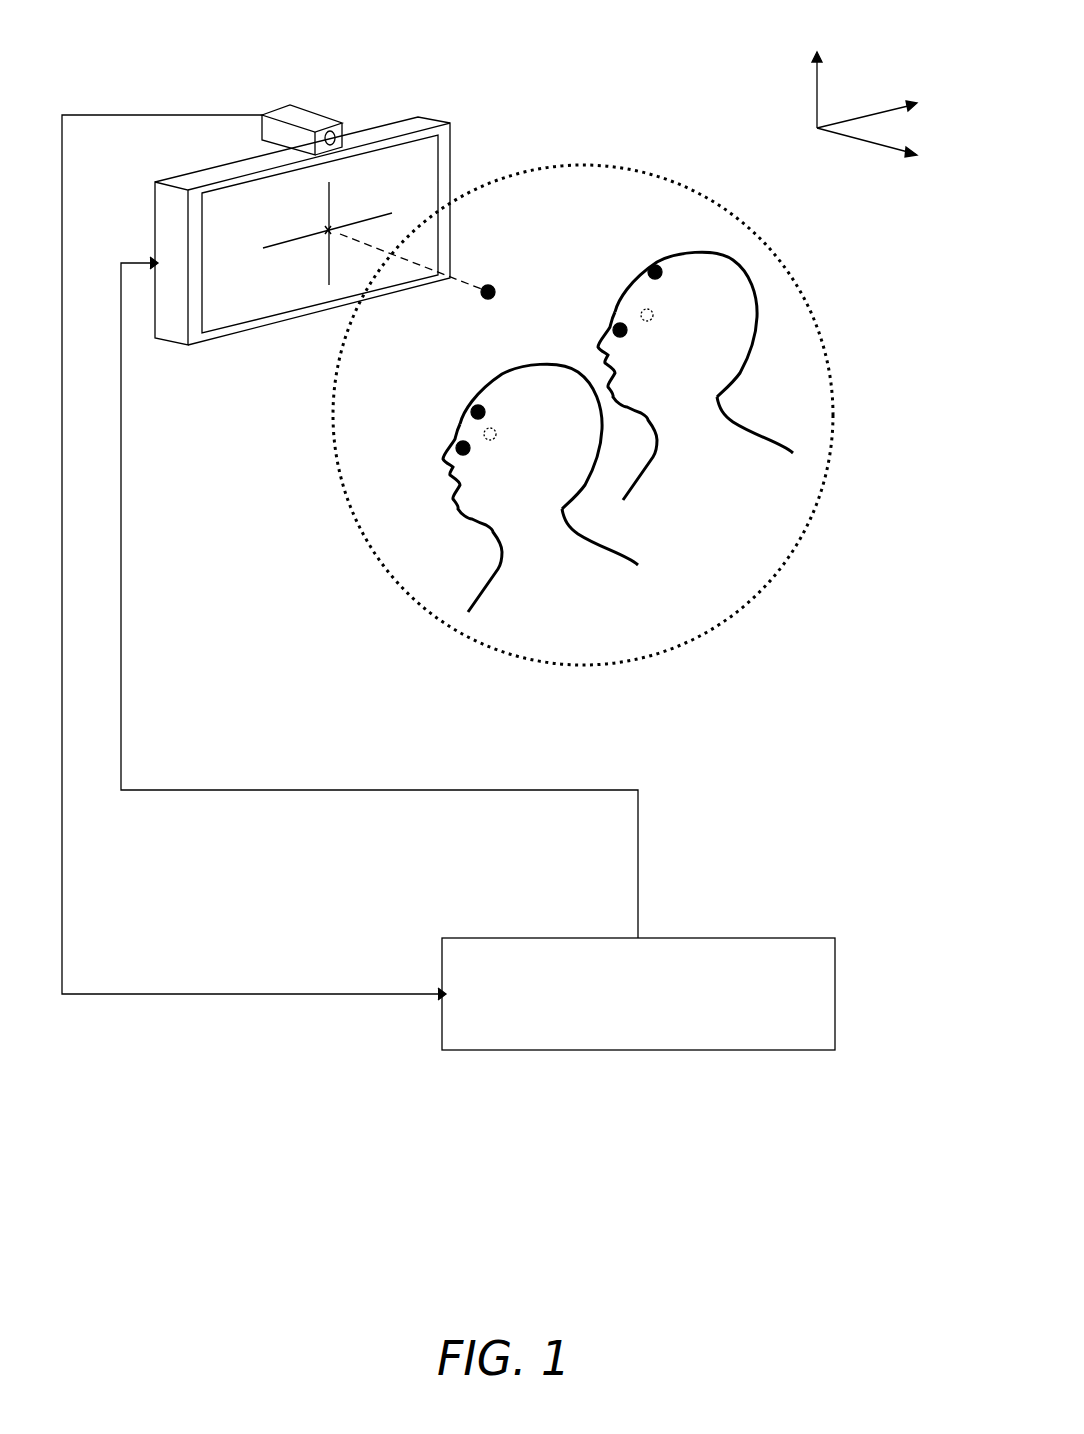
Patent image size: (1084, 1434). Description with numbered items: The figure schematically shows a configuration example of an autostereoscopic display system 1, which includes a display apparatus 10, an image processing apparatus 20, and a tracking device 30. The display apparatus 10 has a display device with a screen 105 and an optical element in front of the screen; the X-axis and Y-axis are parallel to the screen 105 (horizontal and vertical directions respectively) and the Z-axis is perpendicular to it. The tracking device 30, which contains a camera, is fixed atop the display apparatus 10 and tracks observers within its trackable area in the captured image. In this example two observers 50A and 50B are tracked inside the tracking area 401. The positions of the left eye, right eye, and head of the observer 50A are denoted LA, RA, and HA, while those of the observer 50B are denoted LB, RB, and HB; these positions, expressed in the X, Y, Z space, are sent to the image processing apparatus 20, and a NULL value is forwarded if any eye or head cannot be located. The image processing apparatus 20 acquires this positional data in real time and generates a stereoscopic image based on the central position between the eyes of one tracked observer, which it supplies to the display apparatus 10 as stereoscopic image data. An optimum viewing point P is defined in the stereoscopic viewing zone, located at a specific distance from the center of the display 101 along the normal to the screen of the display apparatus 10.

The autostereoscopic display system 1 is at (519, 1120).
The display apparatus 10 is at (370, 257).
The image processing apparatus 20 is at (677, 938).
The tracking device 30 is at (378, 57).
The center of the display 101 is at (328, 232).
The screen 105 is at (210, 257).
The tracking area 401 is at (388, 572).
The observer 50A is at (701, 316).
The observer 50B is at (527, 456).
The optimum viewing point P is at (488, 284).
The head position of observer 50A HA is at (655, 264).
The head position of observer 50B HB is at (481, 407).
The left eye position of observer 50A LA is at (613, 328).
The right eye position of observer 50A RA is at (650, 310).
The left eye position of observer 50B LB is at (458, 448).
The right eye position of observer 50B RB is at (493, 429).